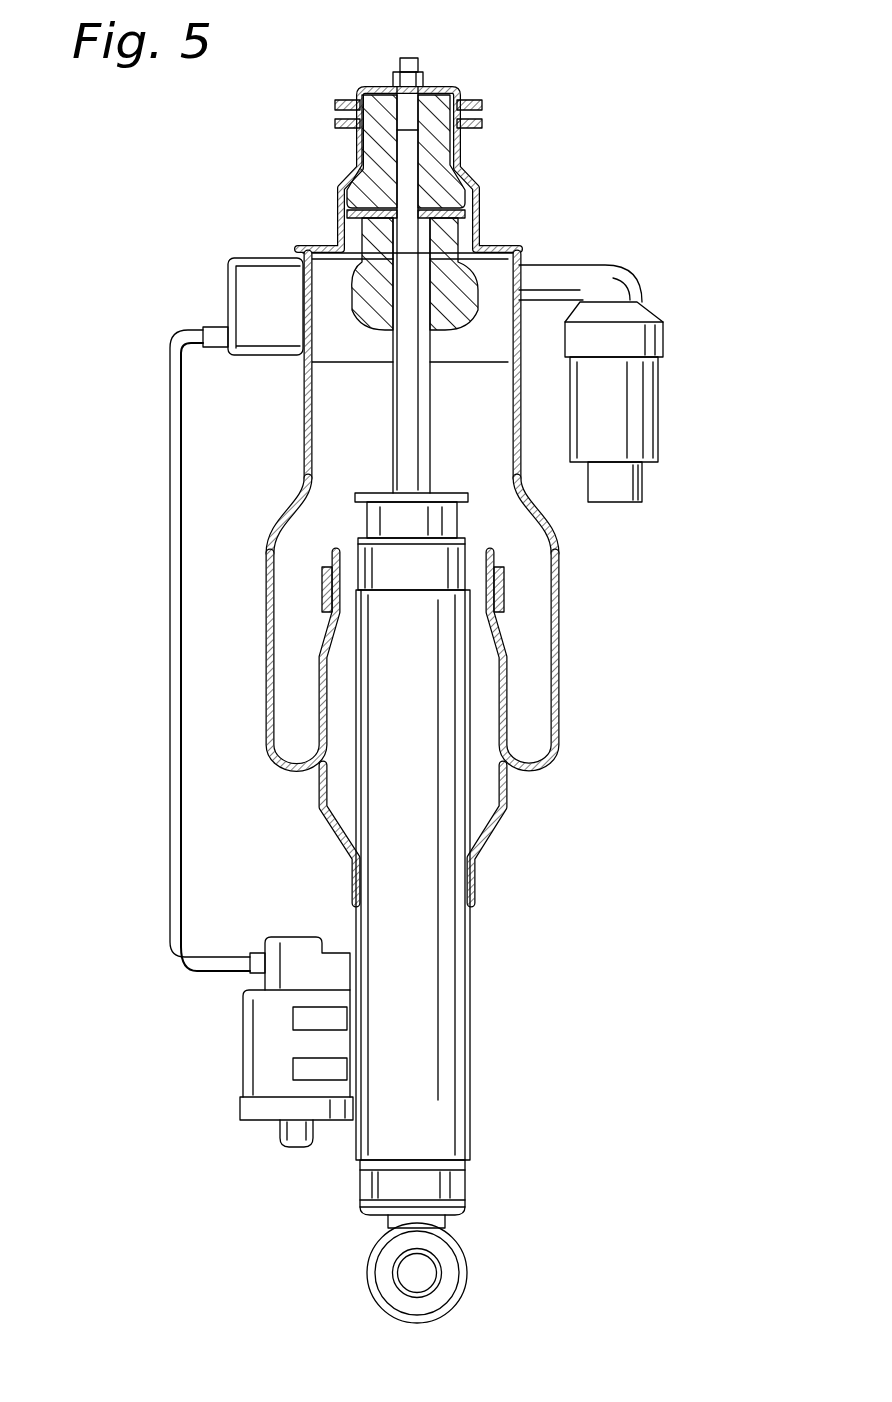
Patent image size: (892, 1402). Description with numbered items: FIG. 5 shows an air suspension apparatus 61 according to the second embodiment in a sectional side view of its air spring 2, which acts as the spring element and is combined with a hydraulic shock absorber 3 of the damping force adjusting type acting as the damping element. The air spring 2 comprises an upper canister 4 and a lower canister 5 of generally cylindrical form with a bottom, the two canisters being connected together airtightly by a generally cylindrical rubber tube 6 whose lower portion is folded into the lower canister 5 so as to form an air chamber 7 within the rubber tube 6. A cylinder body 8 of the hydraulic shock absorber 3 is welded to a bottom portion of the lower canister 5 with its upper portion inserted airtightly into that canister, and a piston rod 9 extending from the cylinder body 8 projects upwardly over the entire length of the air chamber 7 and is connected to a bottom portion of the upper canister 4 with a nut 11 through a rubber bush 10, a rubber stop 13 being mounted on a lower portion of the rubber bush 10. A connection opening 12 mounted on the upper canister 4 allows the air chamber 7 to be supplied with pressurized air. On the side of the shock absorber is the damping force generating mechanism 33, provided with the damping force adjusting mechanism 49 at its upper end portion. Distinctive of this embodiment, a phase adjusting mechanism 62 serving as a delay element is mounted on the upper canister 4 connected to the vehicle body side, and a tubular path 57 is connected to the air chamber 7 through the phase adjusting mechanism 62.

The air suspension apparatus 61 is at (657, 152).
The nut 11 is at (420, 82).
The rubber bush 10 is at (440, 183).
The rubber stop 13 is at (445, 303).
The piston rod 9 is at (413, 451).
The upper canister 4 is at (313, 250).
The air spring 2 is at (300, 394).
The air chamber 7 is at (307, 538).
The rubber tube 6 is at (280, 678).
The lower canister 5 is at (502, 832).
The hydraulic shock absorber 3 is at (478, 1006).
The cylinder body 8 is at (447, 1122).
The phase adjusting mechanism 62 is at (234, 253).
The tubular path 57 is at (169, 606).
The damping force adjusting mechanism 49 is at (292, 940).
The damping force generating mechanism 33 is at (288, 1152).
The connection opening 12 is at (632, 406).